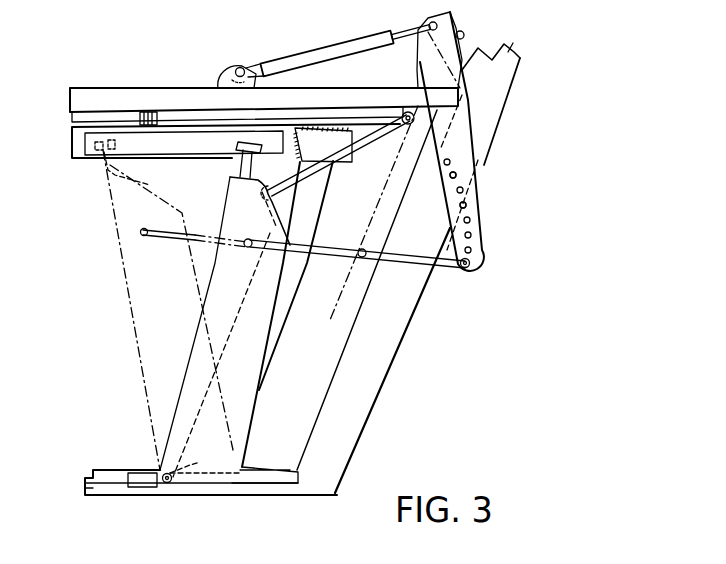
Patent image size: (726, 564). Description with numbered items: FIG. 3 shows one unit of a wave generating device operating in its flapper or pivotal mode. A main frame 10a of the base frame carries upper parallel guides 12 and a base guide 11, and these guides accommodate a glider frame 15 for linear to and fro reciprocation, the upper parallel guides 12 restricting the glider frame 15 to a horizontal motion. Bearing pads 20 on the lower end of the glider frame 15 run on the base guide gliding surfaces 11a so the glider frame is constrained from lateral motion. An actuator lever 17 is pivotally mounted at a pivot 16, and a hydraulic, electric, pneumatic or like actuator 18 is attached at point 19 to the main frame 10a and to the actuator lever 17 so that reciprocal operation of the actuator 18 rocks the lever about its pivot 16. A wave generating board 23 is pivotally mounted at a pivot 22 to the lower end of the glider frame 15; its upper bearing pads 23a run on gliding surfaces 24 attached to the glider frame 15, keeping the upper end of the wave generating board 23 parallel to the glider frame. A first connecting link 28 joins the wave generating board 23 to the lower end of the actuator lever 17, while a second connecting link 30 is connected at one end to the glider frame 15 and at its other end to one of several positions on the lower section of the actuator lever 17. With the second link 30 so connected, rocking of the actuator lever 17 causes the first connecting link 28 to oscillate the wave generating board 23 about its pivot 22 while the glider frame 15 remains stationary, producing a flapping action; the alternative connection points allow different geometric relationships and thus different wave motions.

The main frame 10a is at (90, 88).
The base guide 11 is at (100, 470).
The base guide gliding surface 11a is at (127, 487).
The upper parallel guide 12 is at (120, 116).
The glider frame 15 is at (76, 138).
The pivot 16 is at (455, 52).
The actuator lever 17 is at (482, 215).
The actuator 18 is at (328, 51).
The actuator attachment point 19 is at (236, 69).
The bearing pad 20 is at (140, 483).
The pivot 22 is at (167, 484).
The wave generating board 23 is at (107, 362).
The upper bearing pad 23a is at (235, 150).
The gliding surface 24 is at (92, 150).
The first connecting link 28 is at (453, 265).
The second connecting link 30 is at (378, 134).